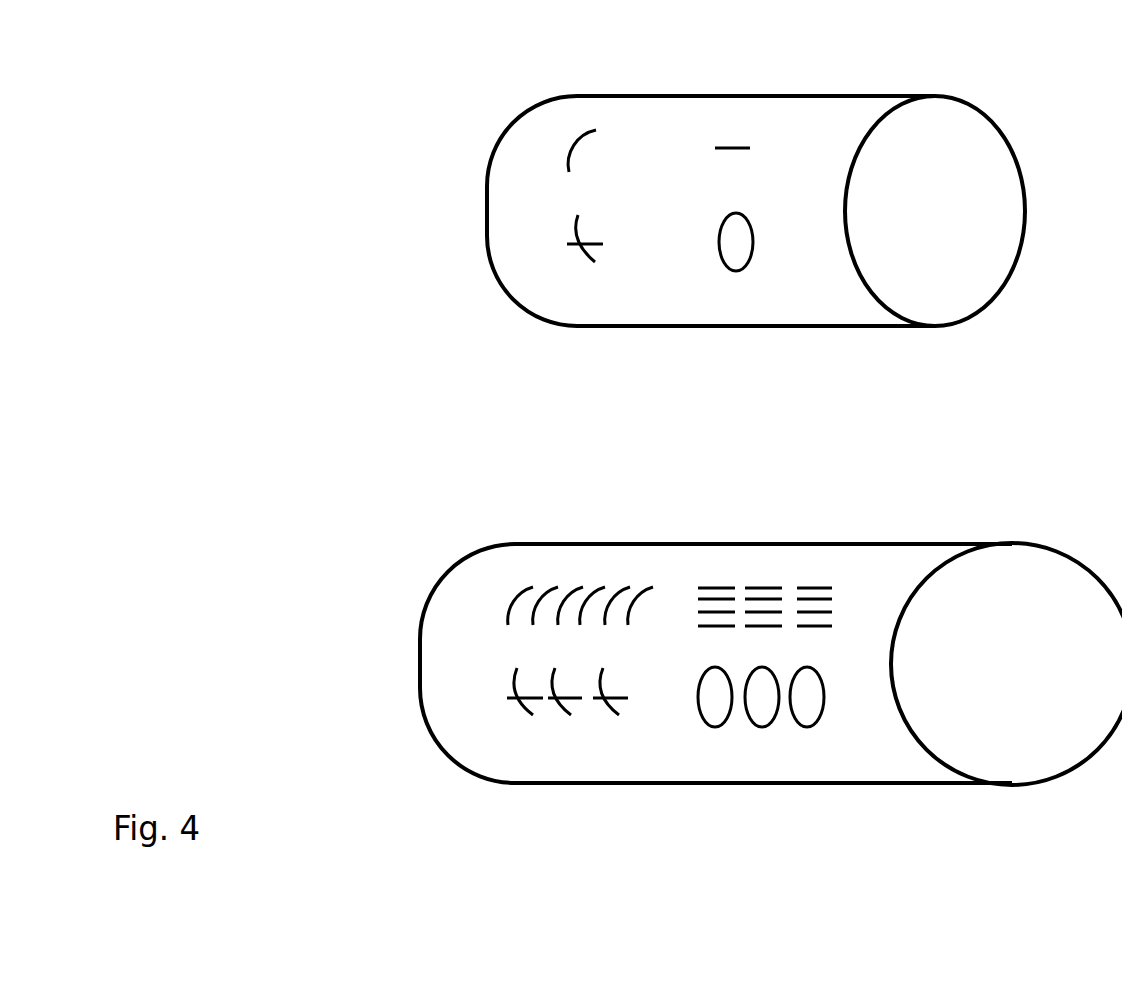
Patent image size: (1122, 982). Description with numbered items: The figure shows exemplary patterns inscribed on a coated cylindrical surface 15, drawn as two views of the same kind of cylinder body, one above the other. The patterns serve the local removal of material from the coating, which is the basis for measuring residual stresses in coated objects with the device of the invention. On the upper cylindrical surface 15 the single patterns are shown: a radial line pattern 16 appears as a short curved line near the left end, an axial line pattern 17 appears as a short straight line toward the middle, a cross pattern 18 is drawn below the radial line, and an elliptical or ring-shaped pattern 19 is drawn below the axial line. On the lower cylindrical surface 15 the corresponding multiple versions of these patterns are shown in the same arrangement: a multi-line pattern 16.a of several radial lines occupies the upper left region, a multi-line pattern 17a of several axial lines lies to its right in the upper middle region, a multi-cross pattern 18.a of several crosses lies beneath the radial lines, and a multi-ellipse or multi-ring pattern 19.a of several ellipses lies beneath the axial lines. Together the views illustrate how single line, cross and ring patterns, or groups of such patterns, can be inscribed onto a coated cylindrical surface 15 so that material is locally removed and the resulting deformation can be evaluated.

The cylindrical surface 15 is at (855, 96).
The line pattern (radial) 16 is at (607, 120).
The line pattern (axial) 17 is at (737, 137).
The cross pattern 18 is at (588, 275).
The ring-shaped pattern 19 is at (745, 268).
The multi-line pattern (radial) 16.a is at (604, 578).
The multi-line pattern (axial) 17a is at (733, 590).
The multi-cross pattern 18.a is at (582, 727).
The multi-ellipse pattern or multi-ring pattern 19.a is at (740, 720).